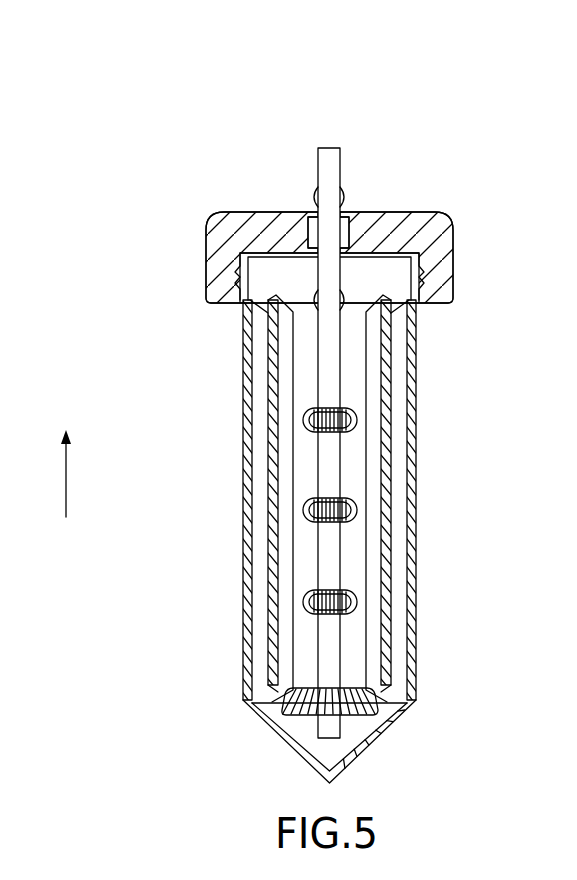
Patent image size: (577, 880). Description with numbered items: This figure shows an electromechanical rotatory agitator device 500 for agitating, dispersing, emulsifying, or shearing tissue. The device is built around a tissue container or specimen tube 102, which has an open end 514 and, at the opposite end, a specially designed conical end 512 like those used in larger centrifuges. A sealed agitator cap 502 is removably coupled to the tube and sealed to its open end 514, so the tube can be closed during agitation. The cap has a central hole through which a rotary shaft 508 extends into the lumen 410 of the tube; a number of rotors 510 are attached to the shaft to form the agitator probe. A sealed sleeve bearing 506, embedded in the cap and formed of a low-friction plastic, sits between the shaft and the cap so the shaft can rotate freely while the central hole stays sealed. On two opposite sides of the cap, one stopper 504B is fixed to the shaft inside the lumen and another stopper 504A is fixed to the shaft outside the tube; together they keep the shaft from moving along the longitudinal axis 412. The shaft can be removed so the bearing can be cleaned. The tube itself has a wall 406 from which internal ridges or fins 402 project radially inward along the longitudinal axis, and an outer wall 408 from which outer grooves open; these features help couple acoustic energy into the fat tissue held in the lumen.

The electromechanical rotatory agitator device 500 is at (146, 137).
The agitator cap 502 is at (243, 218).
The stopper 504A is at (346, 197).
The stopper 504B is at (343, 303).
The sealed sleeve bearing 506 is at (348, 234).
The rotary shaft 508 is at (341, 163).
The rotors 510 is at (357, 518).
The conical end 512 is at (375, 741).
The open end 514 is at (272, 277).
The internal ridges or fins 402 is at (266, 381).
The wall 406 is at (243, 448).
The outer wall 408 is at (243, 517).
The lumen 410 is at (350, 657).
The longitudinal axis 412 is at (67, 486).
The tube 102 is at (216, 686).